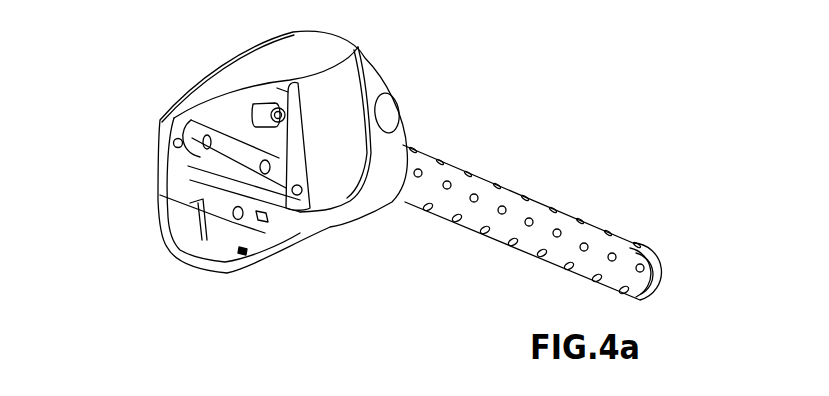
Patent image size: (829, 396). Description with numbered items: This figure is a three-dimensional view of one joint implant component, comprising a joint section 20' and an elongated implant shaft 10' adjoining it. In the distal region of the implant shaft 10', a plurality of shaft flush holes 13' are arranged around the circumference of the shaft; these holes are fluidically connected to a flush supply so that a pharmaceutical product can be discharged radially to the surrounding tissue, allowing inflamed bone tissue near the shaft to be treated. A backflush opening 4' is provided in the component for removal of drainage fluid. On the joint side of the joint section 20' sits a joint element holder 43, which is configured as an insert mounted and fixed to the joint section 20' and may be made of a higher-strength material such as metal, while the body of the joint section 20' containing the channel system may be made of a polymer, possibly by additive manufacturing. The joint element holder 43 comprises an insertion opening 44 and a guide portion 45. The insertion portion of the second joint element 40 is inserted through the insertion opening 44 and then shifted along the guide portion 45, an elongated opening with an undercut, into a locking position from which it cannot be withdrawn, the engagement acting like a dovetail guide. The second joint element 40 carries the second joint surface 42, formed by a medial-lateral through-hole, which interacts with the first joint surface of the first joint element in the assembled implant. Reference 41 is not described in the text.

The implant shaft 10' is at (685, 200).
The shaft flush holes 13' is at (532, 178).
The joint section 20' is at (349, 152).
The backflush opening 4' is at (214, 77).
The second joint element 40 is at (166, 147).
The clamp bar 41 is at (206, 145).
The second joint surface 42 is at (265, 166).
The joint element holder 43 is at (292, 99).
The insertion opening 44 is at (252, 112).
The guide portion 45 is at (261, 214).